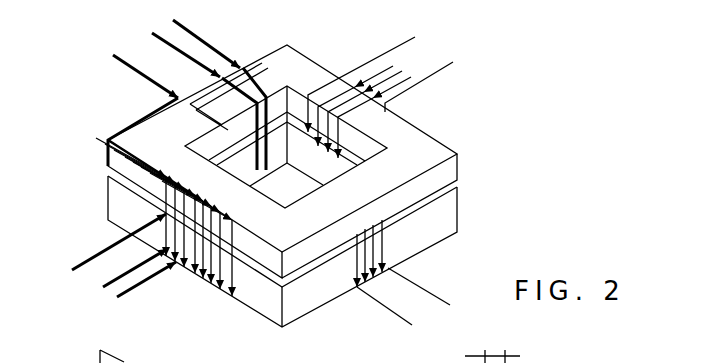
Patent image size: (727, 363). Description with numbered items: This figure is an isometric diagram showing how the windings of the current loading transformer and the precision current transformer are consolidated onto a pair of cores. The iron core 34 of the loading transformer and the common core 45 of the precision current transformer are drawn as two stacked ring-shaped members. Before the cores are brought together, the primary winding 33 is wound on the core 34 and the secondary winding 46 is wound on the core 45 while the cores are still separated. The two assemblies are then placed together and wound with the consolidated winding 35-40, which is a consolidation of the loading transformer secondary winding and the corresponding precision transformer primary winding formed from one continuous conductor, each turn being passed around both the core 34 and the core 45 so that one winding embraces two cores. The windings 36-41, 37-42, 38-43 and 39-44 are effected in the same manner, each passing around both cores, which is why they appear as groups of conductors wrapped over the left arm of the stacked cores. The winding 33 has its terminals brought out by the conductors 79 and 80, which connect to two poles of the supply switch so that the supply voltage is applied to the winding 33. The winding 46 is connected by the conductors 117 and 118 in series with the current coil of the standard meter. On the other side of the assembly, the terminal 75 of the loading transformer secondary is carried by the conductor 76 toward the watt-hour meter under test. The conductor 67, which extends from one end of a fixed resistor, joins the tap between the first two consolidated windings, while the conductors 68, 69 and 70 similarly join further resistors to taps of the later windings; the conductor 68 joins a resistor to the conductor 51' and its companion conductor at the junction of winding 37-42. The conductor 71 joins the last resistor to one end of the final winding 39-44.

The conductor 51' is at (298, 186).
The iron core 34 is at (410, 144).
The common core 45 is at (442, 216).
The primary winding 33 is at (364, 89).
The consolidated winding 35-40 is at (243, 96).
The consolidated winding 36-41 is at (147, 192).
The consolidated winding 37-42 is at (214, 178).
The consolidated winding 38-43 is at (206, 285).
The consolidated winding 39-44 is at (234, 305).
The secondary winding 46 is at (380, 259).
The conductor 67 is at (178, 63).
The conductor 68 is at (138, 84).
The conductor 69 is at (116, 245).
The conductor 70 is at (134, 270).
The conductor 71 is at (164, 270).
The terminal 75 is at (244, 66).
The conductor 76 is at (217, 46).
The conductor 79 is at (399, 50).
The conductor 80 is at (420, 84).
The conductor 117 is at (408, 283).
The conductor 118 is at (380, 313).